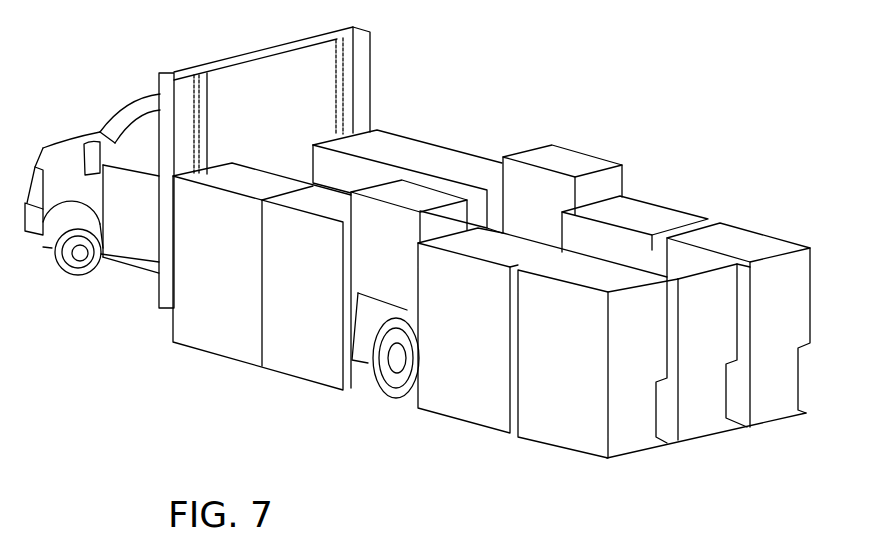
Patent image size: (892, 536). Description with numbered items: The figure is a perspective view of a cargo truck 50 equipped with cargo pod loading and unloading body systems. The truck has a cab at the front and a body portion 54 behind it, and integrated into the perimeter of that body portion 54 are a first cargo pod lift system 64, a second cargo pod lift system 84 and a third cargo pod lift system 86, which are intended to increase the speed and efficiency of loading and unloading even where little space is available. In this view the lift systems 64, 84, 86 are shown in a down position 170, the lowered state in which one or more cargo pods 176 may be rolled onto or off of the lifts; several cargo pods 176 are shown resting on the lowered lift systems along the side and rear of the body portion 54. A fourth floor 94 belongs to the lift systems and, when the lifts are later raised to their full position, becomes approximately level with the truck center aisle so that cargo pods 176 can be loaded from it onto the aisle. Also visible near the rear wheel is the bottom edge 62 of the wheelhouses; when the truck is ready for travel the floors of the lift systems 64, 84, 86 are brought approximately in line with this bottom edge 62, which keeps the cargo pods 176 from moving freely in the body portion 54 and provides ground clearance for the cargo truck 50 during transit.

The cargo truck 50 is at (70, 96).
The body portion 54 is at (603, 125).
The bottom edge of the wheelhouses 62 is at (364, 386).
The first cargo pod lift system 64 is at (211, 366).
The second cargo pod lift system 84 is at (487, 158).
The third cargo pod lift system 86 is at (558, 458).
The fourth floor 94 is at (736, 428).
The down position 170 is at (822, 388).
The cargo pods 176 is at (648, 218).